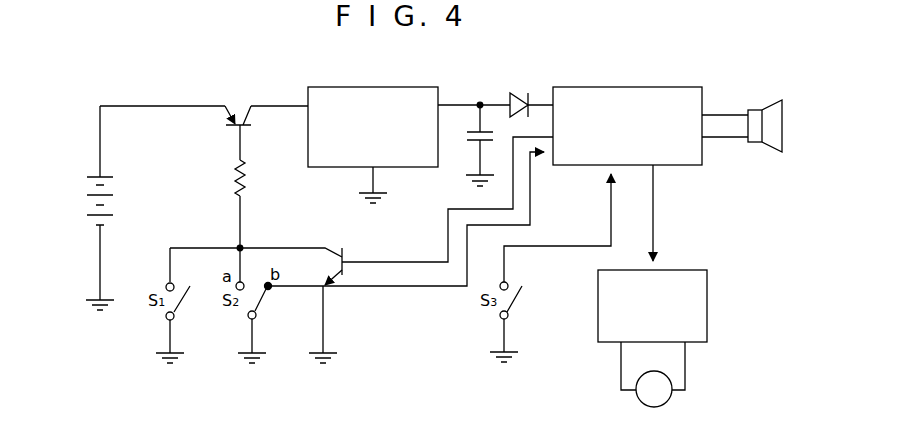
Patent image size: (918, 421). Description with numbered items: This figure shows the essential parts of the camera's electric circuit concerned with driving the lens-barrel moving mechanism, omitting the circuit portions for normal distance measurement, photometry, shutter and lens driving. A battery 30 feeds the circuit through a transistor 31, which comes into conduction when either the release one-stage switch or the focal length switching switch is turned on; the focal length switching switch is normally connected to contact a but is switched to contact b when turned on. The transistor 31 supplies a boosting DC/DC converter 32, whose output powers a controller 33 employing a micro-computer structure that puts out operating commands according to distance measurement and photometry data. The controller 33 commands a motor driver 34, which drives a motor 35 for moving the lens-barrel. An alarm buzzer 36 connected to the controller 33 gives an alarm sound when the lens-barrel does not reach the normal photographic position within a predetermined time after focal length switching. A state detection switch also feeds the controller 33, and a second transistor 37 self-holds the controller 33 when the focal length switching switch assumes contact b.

The battery 30 is at (86, 195).
The transistor 31 is at (240, 112).
The boosting DC/DC converter 32 is at (384, 87).
The controller 33 is at (626, 86).
The motor driver 34 is at (707, 303).
The motor 35 is at (665, 402).
The alarm buzzer 36 is at (772, 102).
The transistor 37 is at (335, 246).